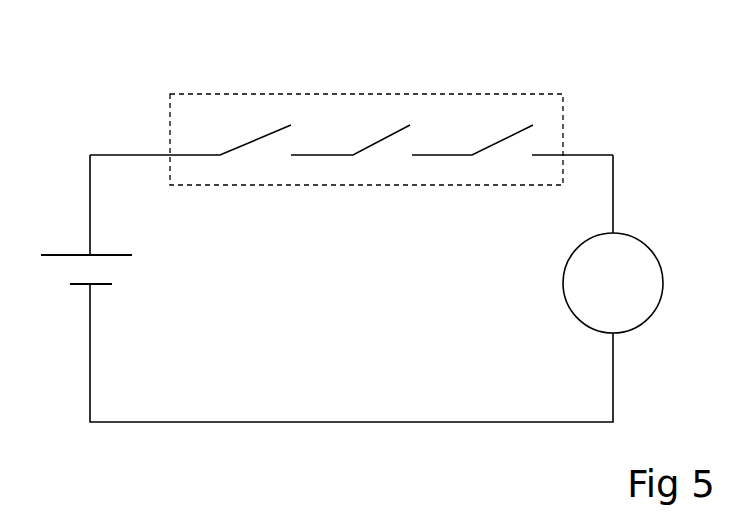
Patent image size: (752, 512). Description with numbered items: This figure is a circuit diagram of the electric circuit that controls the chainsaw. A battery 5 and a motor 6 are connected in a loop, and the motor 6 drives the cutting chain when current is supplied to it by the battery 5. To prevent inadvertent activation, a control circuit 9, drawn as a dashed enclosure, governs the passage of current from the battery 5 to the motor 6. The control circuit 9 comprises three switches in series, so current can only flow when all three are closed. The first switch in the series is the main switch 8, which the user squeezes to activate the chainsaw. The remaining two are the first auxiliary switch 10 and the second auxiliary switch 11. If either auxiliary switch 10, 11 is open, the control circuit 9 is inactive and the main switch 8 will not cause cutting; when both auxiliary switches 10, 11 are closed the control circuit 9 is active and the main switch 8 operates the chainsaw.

The battery 5 is at (62, 249).
The motor 6 is at (648, 248).
The main switch 8 is at (237, 126).
The control circuit 9 is at (563, 140).
The first auxiliary switch 10 is at (376, 126).
The second auxiliary switch 11 is at (504, 126).